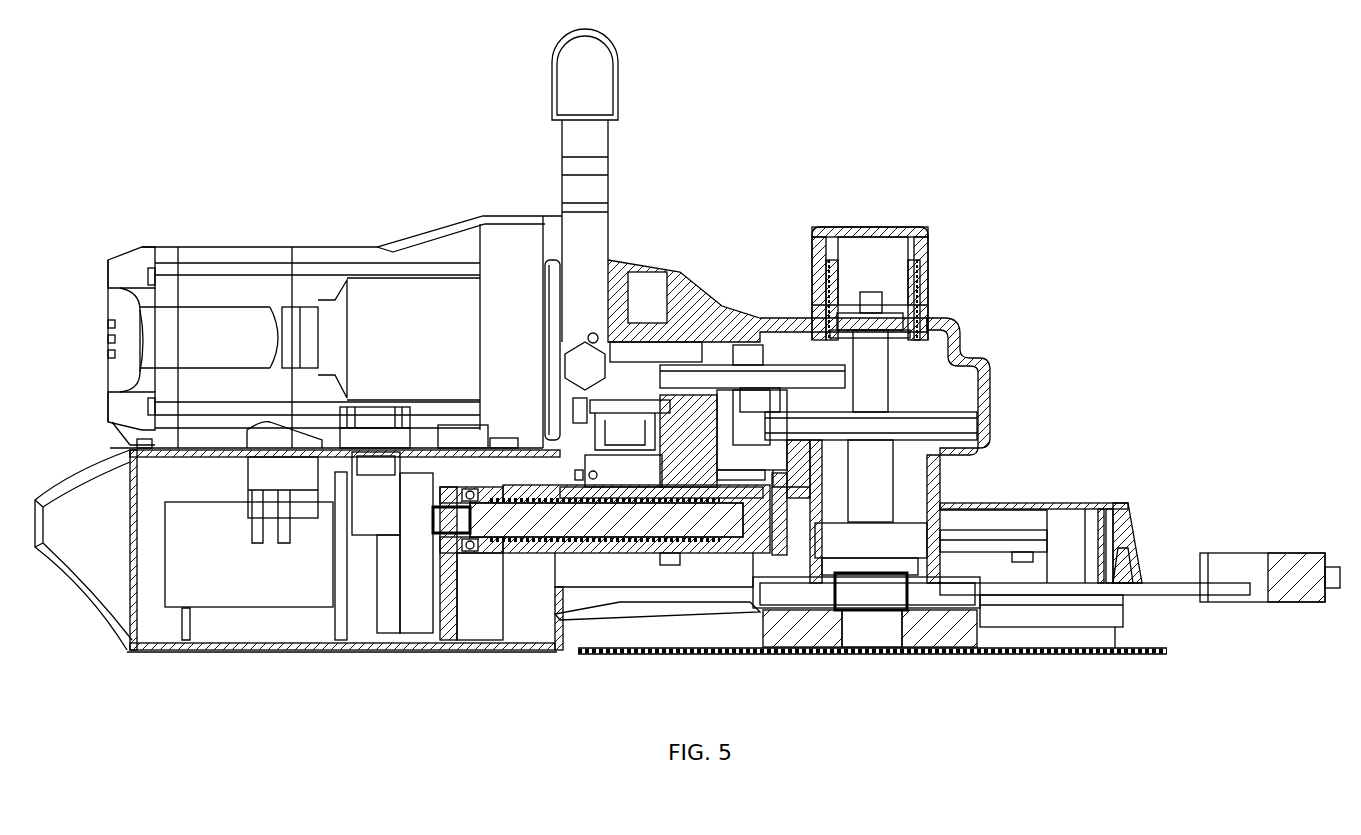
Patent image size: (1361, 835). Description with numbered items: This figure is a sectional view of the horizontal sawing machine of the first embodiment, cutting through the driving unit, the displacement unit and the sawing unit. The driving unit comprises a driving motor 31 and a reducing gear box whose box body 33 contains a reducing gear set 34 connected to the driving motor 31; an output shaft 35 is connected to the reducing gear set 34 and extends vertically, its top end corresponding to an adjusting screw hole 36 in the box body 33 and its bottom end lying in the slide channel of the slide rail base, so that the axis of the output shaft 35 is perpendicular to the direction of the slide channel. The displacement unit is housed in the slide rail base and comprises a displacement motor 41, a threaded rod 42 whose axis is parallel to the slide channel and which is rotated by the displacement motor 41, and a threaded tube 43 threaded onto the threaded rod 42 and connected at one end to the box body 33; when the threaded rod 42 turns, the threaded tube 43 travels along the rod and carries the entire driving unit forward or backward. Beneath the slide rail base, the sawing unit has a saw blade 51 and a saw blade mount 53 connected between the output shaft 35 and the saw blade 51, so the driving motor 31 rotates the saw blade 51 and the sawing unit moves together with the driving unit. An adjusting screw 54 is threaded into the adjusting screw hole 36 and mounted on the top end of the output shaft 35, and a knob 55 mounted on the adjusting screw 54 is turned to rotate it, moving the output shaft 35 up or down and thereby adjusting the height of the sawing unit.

The driving motor 31 is at (440, 305).
The box body 33 is at (693, 280).
The reducing gear set 34 is at (806, 352).
The output shaft 35 is at (877, 365).
The adjusting screw hole 36 is at (917, 284).
The displacement motor 41 is at (265, 587).
The threaded rod 42 is at (518, 522).
The threaded tube 43 is at (538, 547).
The saw blade 51 is at (1152, 655).
The saw blade mount 53 is at (945, 632).
The adjusting screw 54 is at (930, 268).
The knob 55 is at (923, 240).